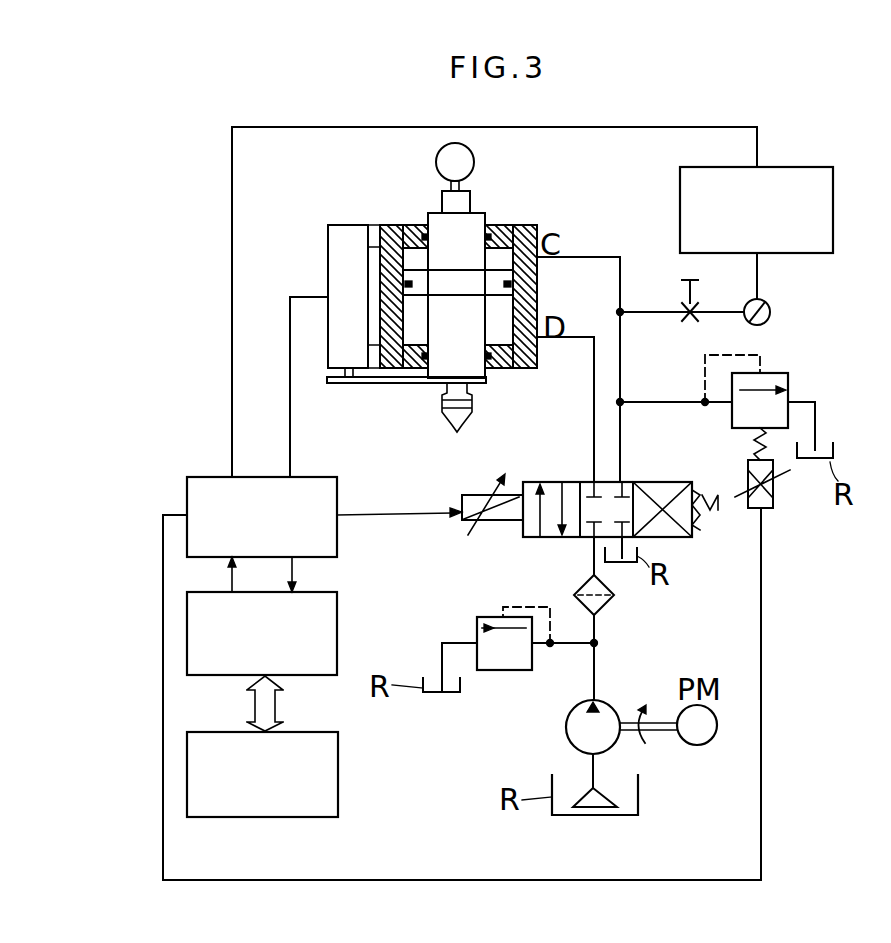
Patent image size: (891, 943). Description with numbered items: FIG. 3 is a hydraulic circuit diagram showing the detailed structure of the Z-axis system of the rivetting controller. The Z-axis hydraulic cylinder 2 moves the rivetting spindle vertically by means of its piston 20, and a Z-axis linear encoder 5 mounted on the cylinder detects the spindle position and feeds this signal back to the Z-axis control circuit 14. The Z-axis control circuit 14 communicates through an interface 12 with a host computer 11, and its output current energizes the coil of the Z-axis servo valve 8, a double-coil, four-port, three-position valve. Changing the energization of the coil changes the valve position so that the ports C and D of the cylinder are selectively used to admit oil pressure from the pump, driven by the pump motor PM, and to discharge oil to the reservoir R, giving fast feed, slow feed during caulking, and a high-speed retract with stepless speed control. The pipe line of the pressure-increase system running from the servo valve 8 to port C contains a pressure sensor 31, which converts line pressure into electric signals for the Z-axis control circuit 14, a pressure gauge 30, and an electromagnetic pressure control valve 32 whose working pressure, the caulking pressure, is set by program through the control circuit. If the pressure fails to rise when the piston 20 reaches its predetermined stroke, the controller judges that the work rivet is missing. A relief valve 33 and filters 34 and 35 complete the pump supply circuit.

The Z-axis hydraulic cylinder 2 is at (522, 222).
The Z-axis linear encoder 5 is at (345, 247).
The piston 20 is at (452, 358).
The Z-axis control circuit 14 is at (200, 476).
The interface 12 is at (337, 612).
The host computer 11 is at (338, 775).
The Z-axis servo valve 8 is at (678, 483).
The pressure gauge 30 is at (765, 303).
The pressure sensor 31 is at (834, 211).
The electromagnetic pressure control valve 32 is at (786, 373).
The relief valve 33 is at (515, 672).
The filter 34 is at (612, 598).
The filter 35 is at (596, 812).